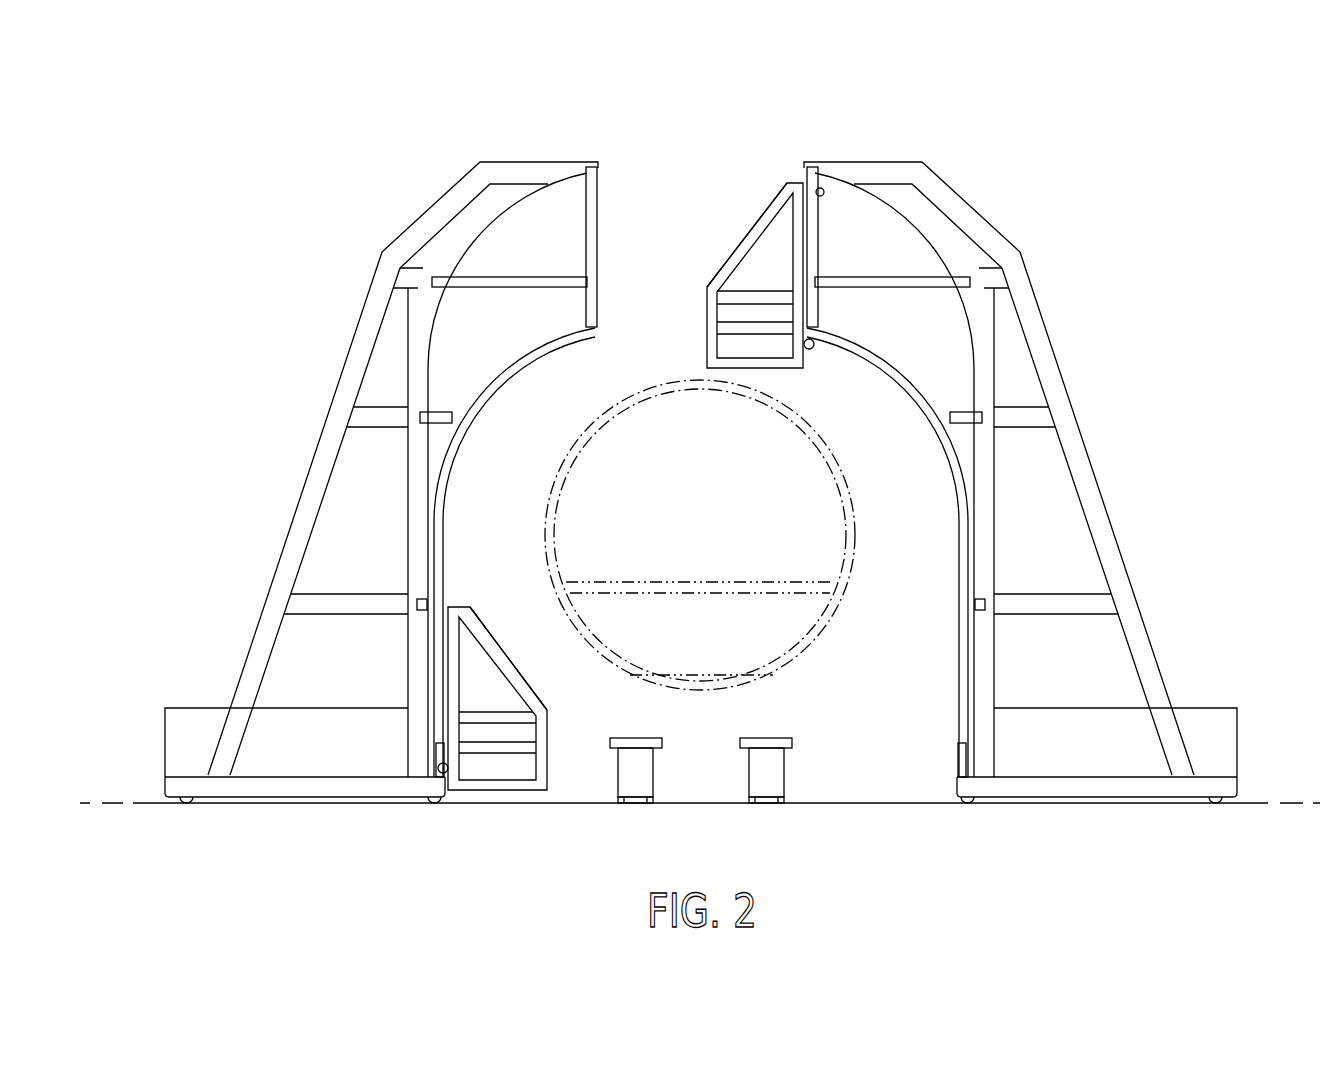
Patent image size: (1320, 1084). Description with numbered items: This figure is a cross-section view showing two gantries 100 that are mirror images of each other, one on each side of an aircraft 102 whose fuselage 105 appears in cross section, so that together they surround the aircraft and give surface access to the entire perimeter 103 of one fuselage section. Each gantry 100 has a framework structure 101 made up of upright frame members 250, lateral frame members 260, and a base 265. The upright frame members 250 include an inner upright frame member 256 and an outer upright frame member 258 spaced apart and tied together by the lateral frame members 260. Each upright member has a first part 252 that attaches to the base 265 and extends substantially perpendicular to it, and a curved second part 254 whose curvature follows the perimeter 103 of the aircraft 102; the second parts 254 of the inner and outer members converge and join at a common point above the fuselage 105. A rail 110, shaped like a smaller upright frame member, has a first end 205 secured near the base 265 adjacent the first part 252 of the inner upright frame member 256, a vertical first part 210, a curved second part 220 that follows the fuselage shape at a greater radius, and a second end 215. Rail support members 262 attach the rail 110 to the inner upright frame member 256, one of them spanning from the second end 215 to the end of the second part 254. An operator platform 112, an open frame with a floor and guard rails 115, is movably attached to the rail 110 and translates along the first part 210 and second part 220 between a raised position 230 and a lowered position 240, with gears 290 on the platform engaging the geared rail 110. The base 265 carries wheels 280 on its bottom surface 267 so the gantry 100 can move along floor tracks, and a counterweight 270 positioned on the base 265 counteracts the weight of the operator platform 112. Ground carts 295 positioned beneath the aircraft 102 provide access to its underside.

The gantry 100 is at (457, 155).
The framework structure 101 is at (418, 208).
The aircraft 102 is at (862, 605).
The perimeter 103 is at (558, 482).
The fuselage 105 is at (724, 700).
The rail 110 is at (546, 343).
The operator platform 112 is at (507, 659).
The guard rails 115 is at (508, 746).
The first end 205 is at (956, 762).
The first part 210 is at (958, 697).
The second end 215 is at (597, 329).
The second part 220 is at (500, 404).
The raised position 230 is at (700, 241).
The lowered position 240 is at (558, 775).
The upright frame members 250 is at (317, 517).
The first part 252 is at (408, 710).
The second part 254 is at (482, 248).
The inner upright frame member 256 is at (412, 552).
The outer upright frame member 258 is at (316, 458).
The lateral frame members 260 is at (402, 284).
The rail support members 262 is at (597, 252).
The base 265 is at (218, 788).
The bottom surface 267 is at (243, 800).
The counterweight 270 is at (178, 730).
The wheels 280 is at (182, 804).
The gears 290 is at (449, 772).
The ground carts 295 is at (757, 765).